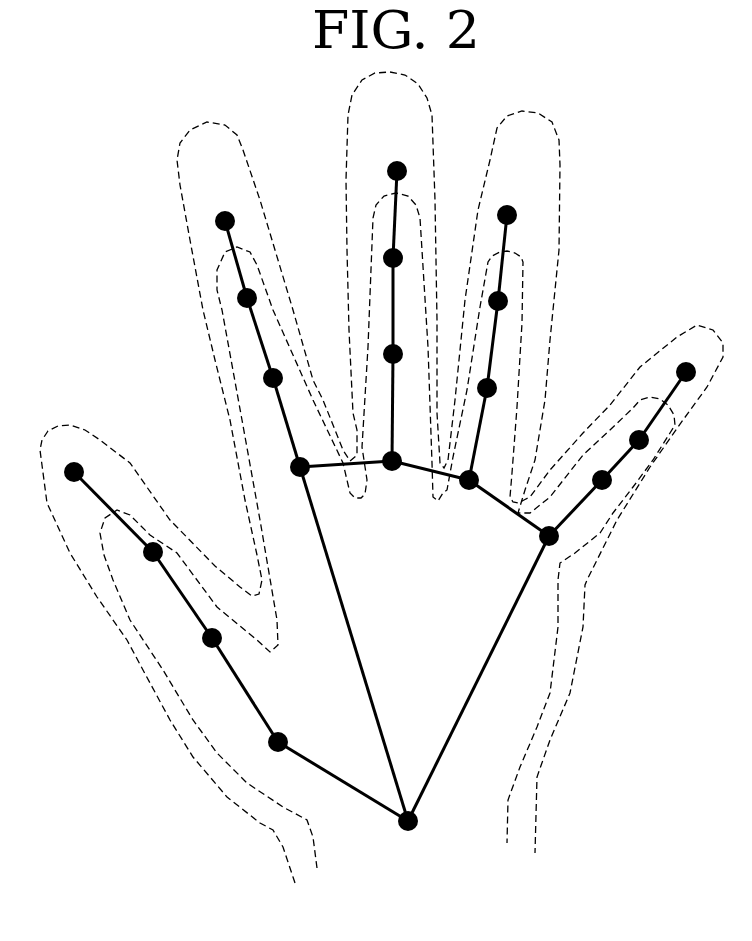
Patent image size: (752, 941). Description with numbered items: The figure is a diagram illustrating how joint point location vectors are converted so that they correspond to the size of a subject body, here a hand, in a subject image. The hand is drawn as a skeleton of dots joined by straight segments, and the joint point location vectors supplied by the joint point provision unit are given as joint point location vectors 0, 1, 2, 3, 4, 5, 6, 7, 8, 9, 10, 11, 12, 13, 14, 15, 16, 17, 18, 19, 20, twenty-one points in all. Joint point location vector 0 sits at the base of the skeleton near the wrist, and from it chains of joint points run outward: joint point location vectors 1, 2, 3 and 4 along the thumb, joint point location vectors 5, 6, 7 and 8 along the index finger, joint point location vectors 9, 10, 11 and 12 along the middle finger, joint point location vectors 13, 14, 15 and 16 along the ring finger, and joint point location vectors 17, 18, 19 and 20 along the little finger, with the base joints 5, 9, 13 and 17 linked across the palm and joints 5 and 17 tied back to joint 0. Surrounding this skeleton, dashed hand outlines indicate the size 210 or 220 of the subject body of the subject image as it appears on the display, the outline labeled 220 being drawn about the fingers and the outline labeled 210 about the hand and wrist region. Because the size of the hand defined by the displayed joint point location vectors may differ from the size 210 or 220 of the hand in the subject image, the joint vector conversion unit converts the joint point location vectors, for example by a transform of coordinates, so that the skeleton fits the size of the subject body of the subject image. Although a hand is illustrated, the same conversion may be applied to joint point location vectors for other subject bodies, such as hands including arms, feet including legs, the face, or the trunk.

The joint point location vector 0 is at (473, 687).
The joint point location vector 1 is at (328, 776).
The joint point location vector 2 is at (227, 684).
The joint point location vector 3 is at (168, 590).
The joint point location vector 4 is at (97, 507).
The joint point location vector 5 is at (338, 639).
The joint point location vector 6 is at (270, 416).
The joint point location vector 7 is at (243, 331).
The joint point location vector 8 is at (218, 254).
The joint point location vector 9 is at (351, 475).
The joint point location vector 10 is at (375, 400).
The joint point location vector 11 is at (375, 296).
The joint point location vector 12 is at (378, 206).
The joint point location vector 13 is at (435, 495).
The joint point location vector 14 is at (503, 425).
The joint point location vector 15 is at (517, 337).
The joint point location vector 16 is at (525, 250).
The joint point location vector 17 is at (533, 524).
The joint point location vector 18 is at (600, 503).
The joint point location vector 19 is at (645, 452).
The joint point location vector 20 is at (684, 399).
The size of the subject body 210 is at (558, 628).
The size of the subject body 220 is at (560, 168).